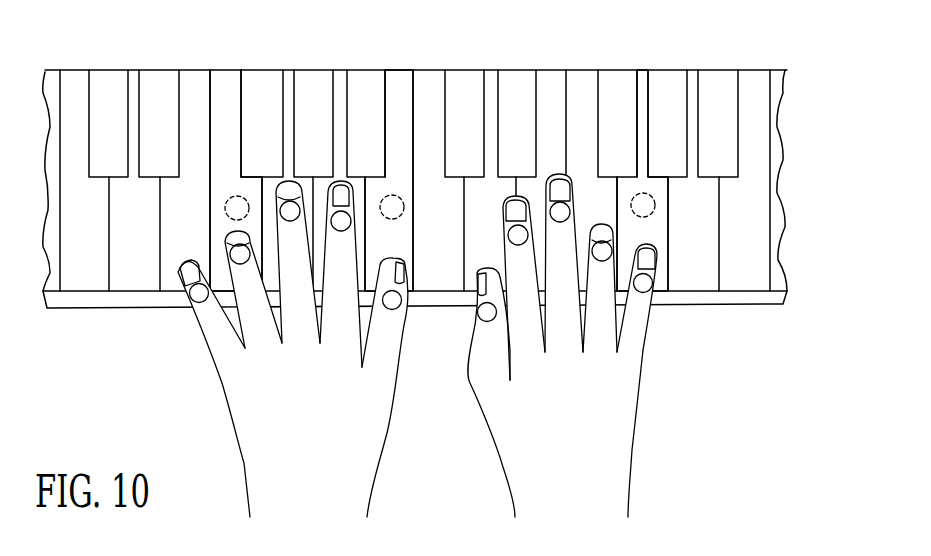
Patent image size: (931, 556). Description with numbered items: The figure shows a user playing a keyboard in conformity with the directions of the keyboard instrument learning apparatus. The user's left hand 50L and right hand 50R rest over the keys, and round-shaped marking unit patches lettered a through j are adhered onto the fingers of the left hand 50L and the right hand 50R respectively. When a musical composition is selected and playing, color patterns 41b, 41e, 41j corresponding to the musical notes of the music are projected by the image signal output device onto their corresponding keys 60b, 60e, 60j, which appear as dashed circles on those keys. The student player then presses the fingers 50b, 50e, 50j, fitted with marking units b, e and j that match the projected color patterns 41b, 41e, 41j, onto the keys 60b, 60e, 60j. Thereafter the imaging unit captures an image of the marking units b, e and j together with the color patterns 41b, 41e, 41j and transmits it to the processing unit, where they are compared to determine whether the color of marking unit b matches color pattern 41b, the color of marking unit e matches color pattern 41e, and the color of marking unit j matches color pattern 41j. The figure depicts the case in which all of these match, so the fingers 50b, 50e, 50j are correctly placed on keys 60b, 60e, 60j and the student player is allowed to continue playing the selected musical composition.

The key 60b is at (227, 77).
The key 60e is at (398, 77).
The key 60j is at (642, 77).
The color pattern 41b is at (230, 197).
The color pattern 41e is at (437, 180).
The color pattern 41j is at (652, 192).
The finger 50b is at (226, 243).
The finger 50e is at (404, 273).
The finger 50j is at (656, 259).
The left hand 50L is at (288, 349).
The right hand 50R is at (604, 345).